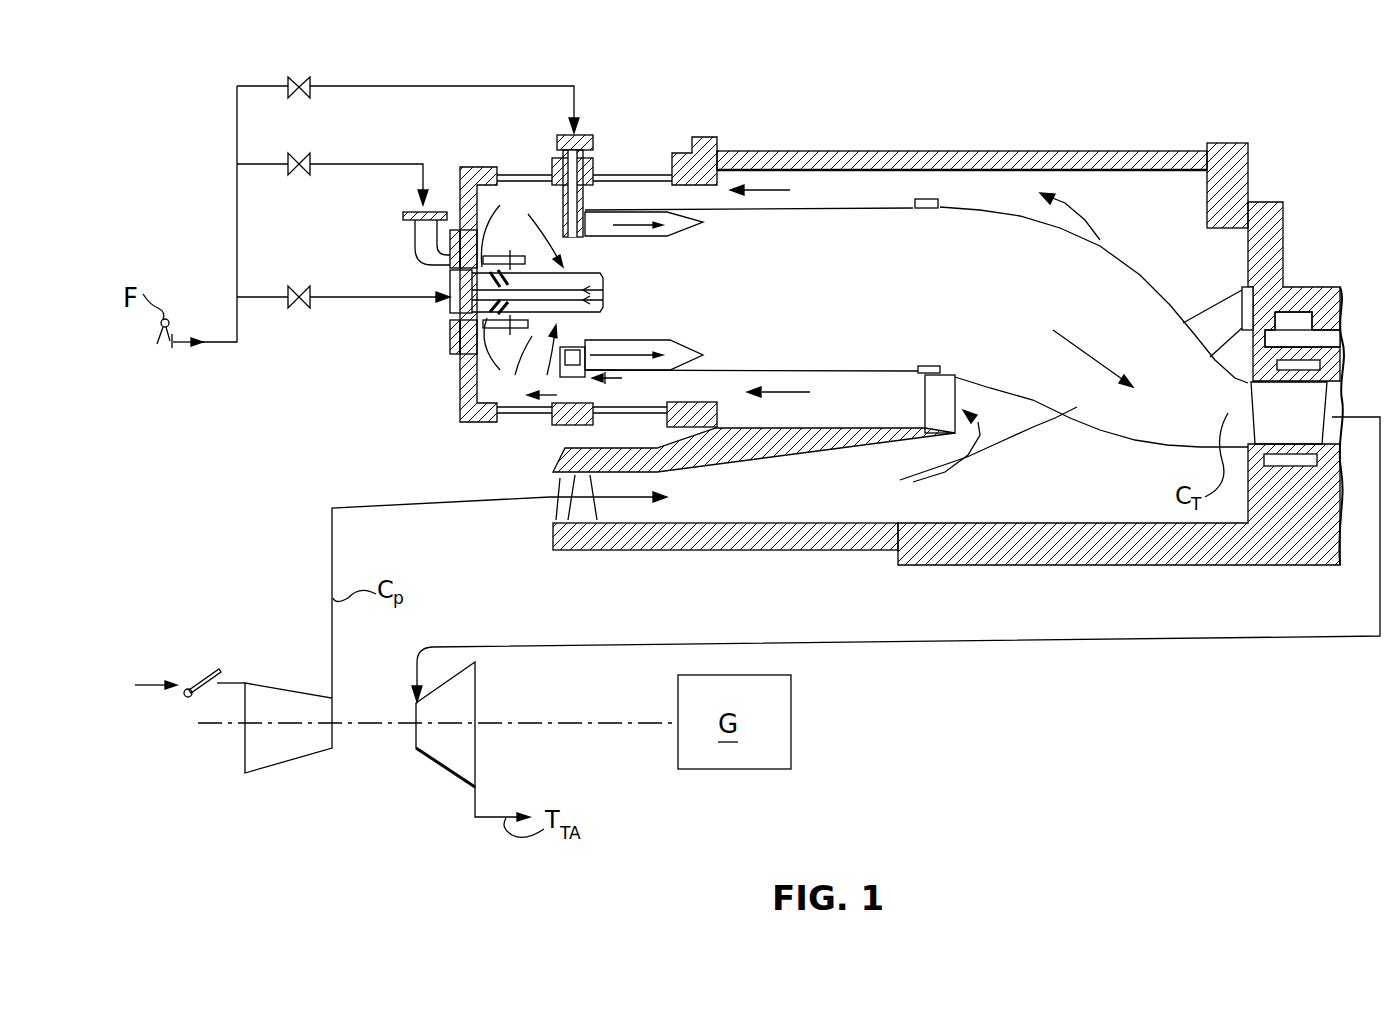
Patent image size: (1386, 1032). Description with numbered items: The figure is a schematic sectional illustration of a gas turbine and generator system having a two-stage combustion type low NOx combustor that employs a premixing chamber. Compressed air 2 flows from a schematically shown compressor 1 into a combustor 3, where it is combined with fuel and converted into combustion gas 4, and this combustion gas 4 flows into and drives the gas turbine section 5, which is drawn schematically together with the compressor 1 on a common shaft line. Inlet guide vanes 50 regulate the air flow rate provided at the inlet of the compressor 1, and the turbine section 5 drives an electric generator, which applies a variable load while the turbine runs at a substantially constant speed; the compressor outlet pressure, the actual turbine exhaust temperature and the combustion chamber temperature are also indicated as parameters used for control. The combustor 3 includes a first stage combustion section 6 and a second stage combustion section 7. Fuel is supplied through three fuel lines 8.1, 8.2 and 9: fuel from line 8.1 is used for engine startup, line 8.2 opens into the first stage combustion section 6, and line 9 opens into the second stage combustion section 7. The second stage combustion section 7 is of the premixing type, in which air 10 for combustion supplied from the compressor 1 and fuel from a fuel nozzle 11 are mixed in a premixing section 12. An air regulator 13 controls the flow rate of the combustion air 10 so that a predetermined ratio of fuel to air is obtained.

The compressor 1 is at (277, 702).
The compressed air 2 is at (446, 496).
The combustor 3 is at (858, 112).
The combustion gas 4 is at (1131, 353).
The gas turbine section 5 is at (1307, 408).
The first stage combustion section 6 is at (515, 378).
The second stage combustion section 7 is at (773, 300).
The fuel line 8.1 is at (392, 293).
The fuel line 8.2 is at (402, 164).
The fuel line 9 is at (479, 63).
The air for combustion 10 is at (558, 200).
The fuel nozzle 11 is at (607, 222).
The premixing section 12 is at (648, 222).
The air regulator 13 is at (608, 372).
The inlet guide vanes 50 is at (192, 683).